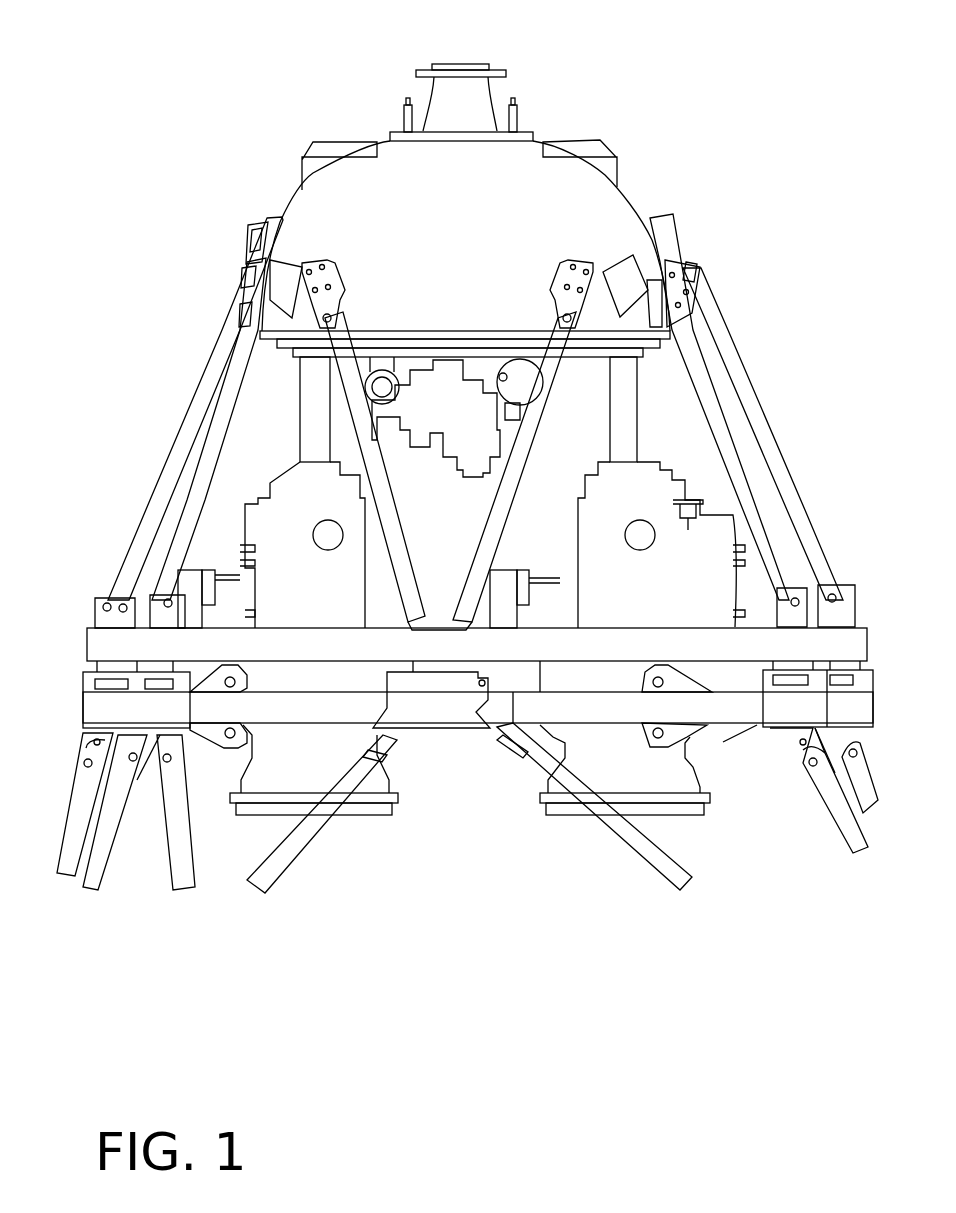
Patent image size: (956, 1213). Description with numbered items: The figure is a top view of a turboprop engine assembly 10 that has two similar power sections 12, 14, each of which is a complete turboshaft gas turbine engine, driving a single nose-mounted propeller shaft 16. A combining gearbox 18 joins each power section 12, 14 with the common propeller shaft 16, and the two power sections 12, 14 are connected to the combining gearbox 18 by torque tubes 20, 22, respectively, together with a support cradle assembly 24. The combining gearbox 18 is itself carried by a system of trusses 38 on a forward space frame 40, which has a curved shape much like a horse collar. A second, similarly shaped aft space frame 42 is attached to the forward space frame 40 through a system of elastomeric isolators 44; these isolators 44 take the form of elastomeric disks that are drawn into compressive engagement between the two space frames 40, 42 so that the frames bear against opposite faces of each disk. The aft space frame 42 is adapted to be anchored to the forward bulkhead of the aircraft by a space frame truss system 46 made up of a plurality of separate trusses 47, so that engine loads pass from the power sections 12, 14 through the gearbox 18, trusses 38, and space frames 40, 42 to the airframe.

The turboprop engine assembly 10 is at (150, 375).
The power section 12 is at (657, 475).
The power section 14 is at (262, 505).
The propeller shaft 16 is at (458, 63).
The combining gearbox 18 is at (313, 212).
The torque tube 20 is at (623, 415).
The torque tube 22 is at (317, 417).
The support cradle assembly 24 is at (353, 328).
The trusses 38 is at (150, 523).
The forward space frame 40 is at (137, 659).
The aft space frame 42 is at (137, 724).
The elastomeric isolators 44 is at (98, 680).
The space frame truss system 46 is at (48, 893).
The trusses 47 is at (168, 872).